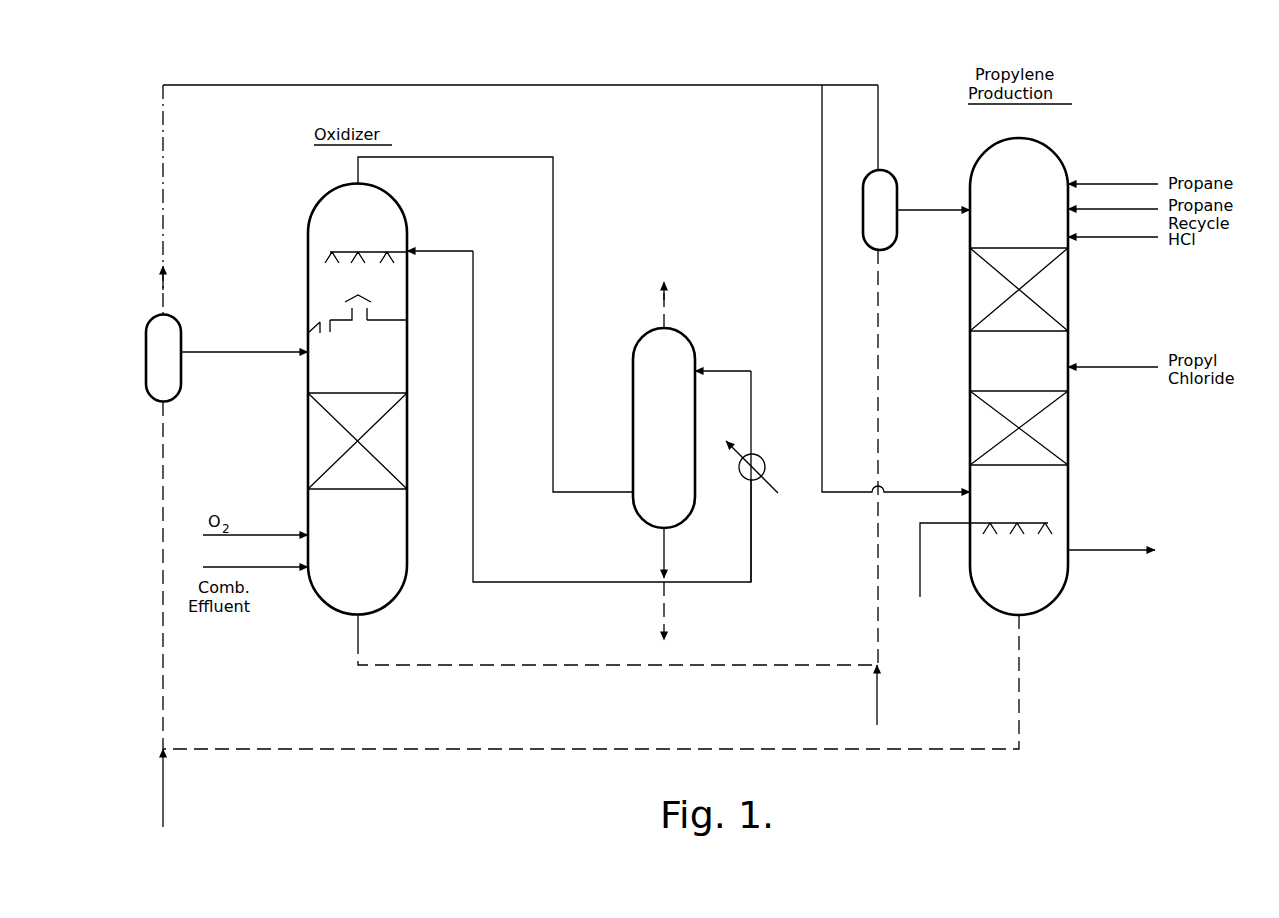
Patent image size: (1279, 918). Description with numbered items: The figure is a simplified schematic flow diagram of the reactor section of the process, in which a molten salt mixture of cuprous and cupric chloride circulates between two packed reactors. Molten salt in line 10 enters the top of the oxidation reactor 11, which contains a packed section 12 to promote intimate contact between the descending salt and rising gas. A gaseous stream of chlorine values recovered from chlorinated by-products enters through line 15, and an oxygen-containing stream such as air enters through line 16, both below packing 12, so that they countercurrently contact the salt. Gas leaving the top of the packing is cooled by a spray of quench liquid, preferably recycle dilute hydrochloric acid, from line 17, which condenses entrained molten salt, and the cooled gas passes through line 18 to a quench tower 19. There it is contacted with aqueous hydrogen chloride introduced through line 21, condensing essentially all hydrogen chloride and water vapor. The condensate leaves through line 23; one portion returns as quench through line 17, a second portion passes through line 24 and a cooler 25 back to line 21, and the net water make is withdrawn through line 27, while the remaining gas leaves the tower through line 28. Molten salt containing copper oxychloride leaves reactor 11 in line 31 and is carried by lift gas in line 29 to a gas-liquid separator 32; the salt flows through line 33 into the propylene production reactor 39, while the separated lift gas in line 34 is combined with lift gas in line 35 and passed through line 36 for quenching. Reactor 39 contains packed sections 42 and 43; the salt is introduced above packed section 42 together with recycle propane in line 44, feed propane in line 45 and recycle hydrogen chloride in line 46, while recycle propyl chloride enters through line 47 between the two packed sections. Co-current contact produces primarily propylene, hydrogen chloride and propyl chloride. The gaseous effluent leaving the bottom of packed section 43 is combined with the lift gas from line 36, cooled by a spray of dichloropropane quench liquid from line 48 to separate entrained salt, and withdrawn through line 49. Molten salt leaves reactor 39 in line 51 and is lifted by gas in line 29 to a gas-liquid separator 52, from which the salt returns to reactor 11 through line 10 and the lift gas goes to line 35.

The line 10 is at (268, 352).
The oxidation reactor 11 is at (292, 293).
The packed section 12 is at (308, 441).
The line 15 is at (280, 569).
The line 16 is at (282, 534).
The line 17 is at (473, 338).
The line 18 is at (478, 157).
The quench tower 19 is at (633, 394).
The line 21 is at (752, 402).
The line 23 is at (664, 552).
The line 24 is at (752, 522).
The cooler 25 is at (742, 478).
The line 27 is at (664, 608).
The line 28 is at (665, 318).
The line 29 is at (877, 703).
The line 31 is at (462, 667).
The gas-liquid separator 32 is at (898, 230).
The line 33 is at (934, 208).
The line 34 is at (879, 134).
The line 35 is at (556, 85).
The line 36 is at (822, 270).
The propylene production reactor 39 is at (967, 352).
The packed section 42 is at (1058, 292).
The packed section 43 is at (1058, 430).
The line 44 is at (1138, 209).
The line 45 is at (1138, 183).
The line 46 is at (1138, 238).
The line 47 is at (1105, 369).
The line 48 is at (943, 524).
The line 49 is at (1098, 551).
The line 51 is at (1020, 645).
The gas-liquid separator 52 is at (147, 358).